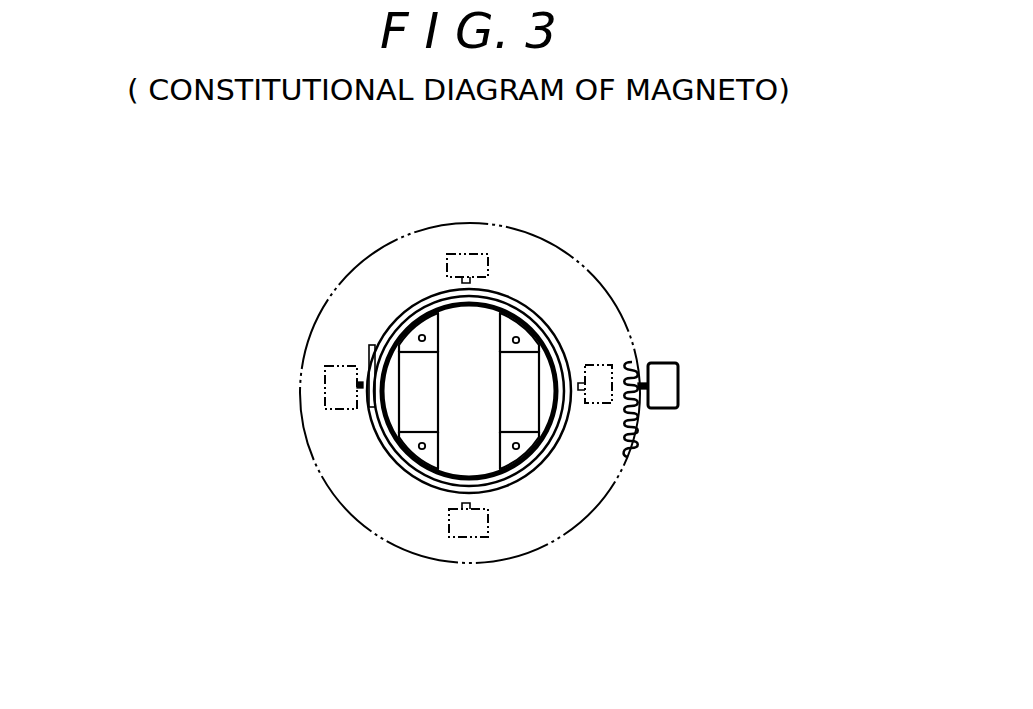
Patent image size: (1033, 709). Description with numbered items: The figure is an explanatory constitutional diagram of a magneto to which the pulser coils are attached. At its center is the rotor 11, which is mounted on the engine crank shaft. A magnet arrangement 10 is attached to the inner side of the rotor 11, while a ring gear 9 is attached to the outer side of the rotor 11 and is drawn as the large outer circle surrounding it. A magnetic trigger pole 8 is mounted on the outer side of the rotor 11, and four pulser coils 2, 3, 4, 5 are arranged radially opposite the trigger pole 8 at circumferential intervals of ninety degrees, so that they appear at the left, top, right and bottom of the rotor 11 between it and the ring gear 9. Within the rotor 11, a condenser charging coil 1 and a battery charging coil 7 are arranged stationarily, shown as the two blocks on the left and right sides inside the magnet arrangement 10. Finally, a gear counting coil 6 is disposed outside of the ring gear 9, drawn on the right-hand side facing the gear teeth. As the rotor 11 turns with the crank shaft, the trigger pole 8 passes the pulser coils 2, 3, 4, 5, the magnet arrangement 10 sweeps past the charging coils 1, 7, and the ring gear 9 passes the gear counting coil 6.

The condenser charging coil 1 is at (408, 406).
The pulser coil 2 is at (326, 400).
The pulser coil 3 is at (478, 254).
The pulser coil 4 is at (607, 364).
The pulser coil 5 is at (458, 537).
The gear counting coil 6 is at (856, 520).
The battery charging coil 7 is at (527, 393).
The magnetic trigger pole 8 is at (367, 352).
The ring gear 9 is at (565, 540).
The magnet arrangement 10 is at (462, 420).
The rotor 11 is at (542, 318).